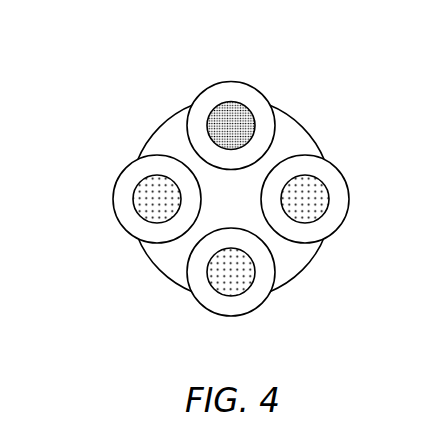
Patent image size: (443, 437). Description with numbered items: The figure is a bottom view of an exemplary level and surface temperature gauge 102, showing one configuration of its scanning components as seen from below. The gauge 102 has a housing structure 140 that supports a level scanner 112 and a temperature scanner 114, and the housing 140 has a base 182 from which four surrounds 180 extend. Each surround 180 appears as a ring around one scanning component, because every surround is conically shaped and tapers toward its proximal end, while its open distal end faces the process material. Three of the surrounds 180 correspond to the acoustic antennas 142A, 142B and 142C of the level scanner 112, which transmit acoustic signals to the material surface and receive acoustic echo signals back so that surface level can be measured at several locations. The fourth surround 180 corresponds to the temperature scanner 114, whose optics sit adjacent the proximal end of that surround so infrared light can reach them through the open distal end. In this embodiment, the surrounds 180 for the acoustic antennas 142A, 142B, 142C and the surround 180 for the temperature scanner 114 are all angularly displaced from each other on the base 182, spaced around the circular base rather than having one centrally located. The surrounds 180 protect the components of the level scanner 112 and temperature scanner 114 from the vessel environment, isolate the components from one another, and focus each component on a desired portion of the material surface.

The level and temperature gauge 102 is at (138, 52).
The level scanner 112 is at (117, 293).
The temperature scanner 114 is at (230, 108).
The housing structure 140 is at (160, 128).
The acoustic antenna 142A is at (123, 193).
The acoustic antenna 142B is at (242, 312).
The acoustic antenna 142C is at (338, 182).
The surround 180 is at (261, 92).
The base 182 is at (307, 265).